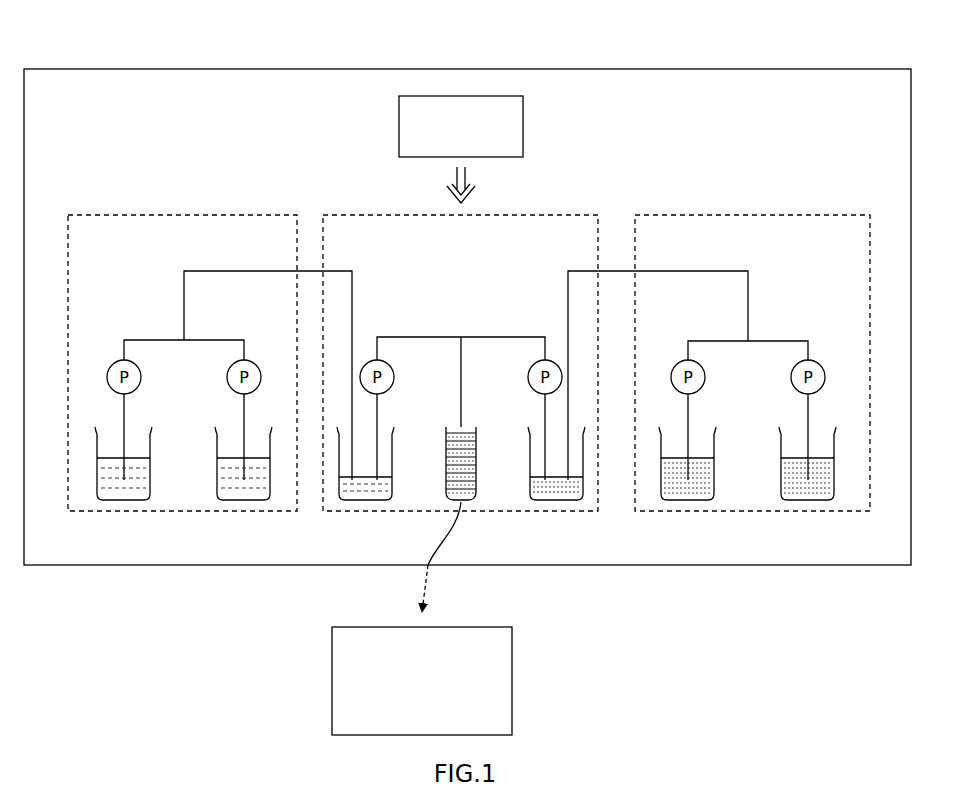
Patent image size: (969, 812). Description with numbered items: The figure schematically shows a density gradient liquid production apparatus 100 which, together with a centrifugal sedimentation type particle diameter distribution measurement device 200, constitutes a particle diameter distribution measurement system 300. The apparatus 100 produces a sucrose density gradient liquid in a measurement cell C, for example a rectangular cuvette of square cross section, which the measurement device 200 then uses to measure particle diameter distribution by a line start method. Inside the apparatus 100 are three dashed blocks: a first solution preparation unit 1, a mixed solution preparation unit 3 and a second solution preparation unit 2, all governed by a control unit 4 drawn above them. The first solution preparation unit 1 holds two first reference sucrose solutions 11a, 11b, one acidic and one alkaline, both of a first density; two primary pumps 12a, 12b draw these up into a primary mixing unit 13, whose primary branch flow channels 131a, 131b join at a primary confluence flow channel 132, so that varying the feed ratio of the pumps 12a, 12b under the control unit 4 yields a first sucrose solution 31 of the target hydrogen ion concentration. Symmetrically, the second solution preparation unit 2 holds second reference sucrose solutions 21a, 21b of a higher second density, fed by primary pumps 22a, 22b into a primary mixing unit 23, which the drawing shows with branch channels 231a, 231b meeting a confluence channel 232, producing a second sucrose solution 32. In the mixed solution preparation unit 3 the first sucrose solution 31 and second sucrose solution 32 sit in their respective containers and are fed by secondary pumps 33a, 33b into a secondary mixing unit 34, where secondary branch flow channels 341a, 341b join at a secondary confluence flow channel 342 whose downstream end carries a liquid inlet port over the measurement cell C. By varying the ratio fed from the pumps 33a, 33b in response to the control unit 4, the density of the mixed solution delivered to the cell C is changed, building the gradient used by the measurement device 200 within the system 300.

The density gradient liquid production apparatus 100 is at (853, 69).
The control unit 4 is at (523, 130).
The first solution preparation unit 1 is at (112, 215).
The second solution preparation unit 2 is at (832, 215).
The mixed solution preparation unit 3 is at (568, 215).
The primary mixing unit 13 is at (231, 354).
The primary confluence flow channel 132 is at (200, 271).
The primary branch flow channel 131a is at (154, 340).
The primary branch flow channel 131b is at (214, 340).
The primary pump 12a is at (141, 383).
The primary pump 12b is at (227, 371).
The first reference sucrose solution 11a is at (115, 494).
The first reference sucrose solution 11b is at (254, 494).
The secondary mixing unit 34 is at (458, 335).
The secondary branch flow channel 341a is at (407, 337).
The secondary branch flow channel 341b is at (520, 337).
The secondary confluence flow channel 342 is at (466, 357).
The secondary pump 33a is at (394, 384).
The secondary pump 33b is at (528, 384).
The first sucrose solution 31 is at (359, 494).
The second sucrose solution 32 is at (559, 494).
The measurement cell C is at (480, 486).
The primary mixing unit 23 is at (696, 354).
The second common flow path 232 is at (727, 271).
The second branch flow path a 231a is at (711, 341).
The second branch flow path b 231b is at (789, 341).
The primary pump 22a is at (705, 372).
The primary pump 22b is at (791, 380).
The second reference sucrose solution 21a is at (678, 494).
The second reference sucrose solution 21b is at (817, 494).
The centrifugal sedimentation type particle diameter distribution measurement device 200 is at (512, 657).
The particle diameter distribution measurement system 300 is at (760, 656).